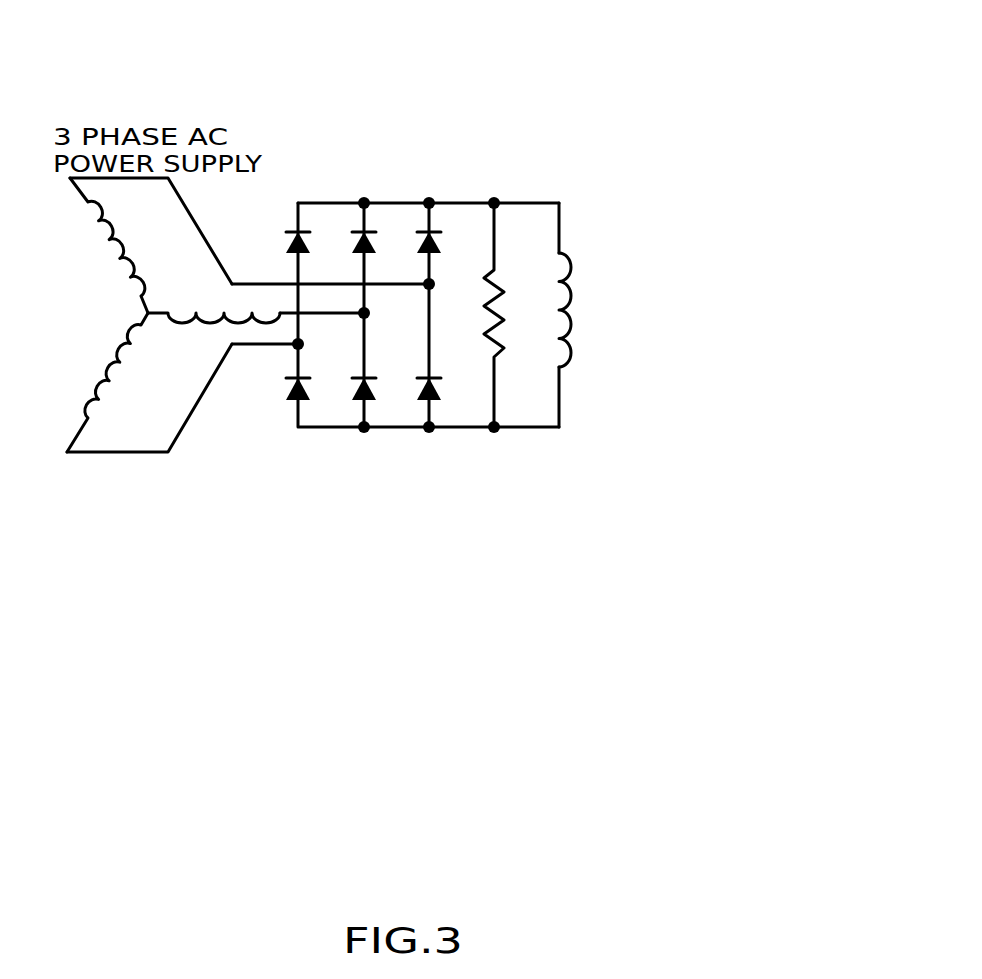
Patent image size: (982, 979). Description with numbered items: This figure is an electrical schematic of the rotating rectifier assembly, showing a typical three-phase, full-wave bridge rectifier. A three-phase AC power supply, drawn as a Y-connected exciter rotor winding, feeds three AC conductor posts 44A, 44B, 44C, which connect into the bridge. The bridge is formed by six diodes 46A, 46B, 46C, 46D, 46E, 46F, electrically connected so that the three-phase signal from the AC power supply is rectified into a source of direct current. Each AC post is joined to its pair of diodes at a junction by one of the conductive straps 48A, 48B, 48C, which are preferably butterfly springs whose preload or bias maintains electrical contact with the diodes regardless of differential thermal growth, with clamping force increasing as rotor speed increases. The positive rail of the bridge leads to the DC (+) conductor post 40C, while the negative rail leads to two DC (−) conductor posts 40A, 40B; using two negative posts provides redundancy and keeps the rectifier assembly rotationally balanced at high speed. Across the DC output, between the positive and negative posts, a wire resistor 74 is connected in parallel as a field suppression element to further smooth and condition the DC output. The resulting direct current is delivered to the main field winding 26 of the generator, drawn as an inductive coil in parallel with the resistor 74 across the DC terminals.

The main field winding 26 is at (620, 337).
The DC conductor 40A is at (611, 472).
The DC conductor 40B is at (543, 439).
The DC conductor 40C is at (561, 193).
The AC conductor 44A is at (247, 298).
The AC conductor 44B is at (287, 325).
The AC conductor 44C is at (251, 357).
The diode 46A is at (357, 188).
The diode 46B is at (364, 242).
The diode 46C is at (429, 242).
The diode 46D is at (298, 389).
The diode 46E is at (364, 389).
The diode 46F is at (429, 389).
The conductive strap 48A is at (310, 362).
The conductive strap 48B is at (366, 331).
The conductive strap 48C is at (427, 303).
The wire resistor 74 is at (497, 326).